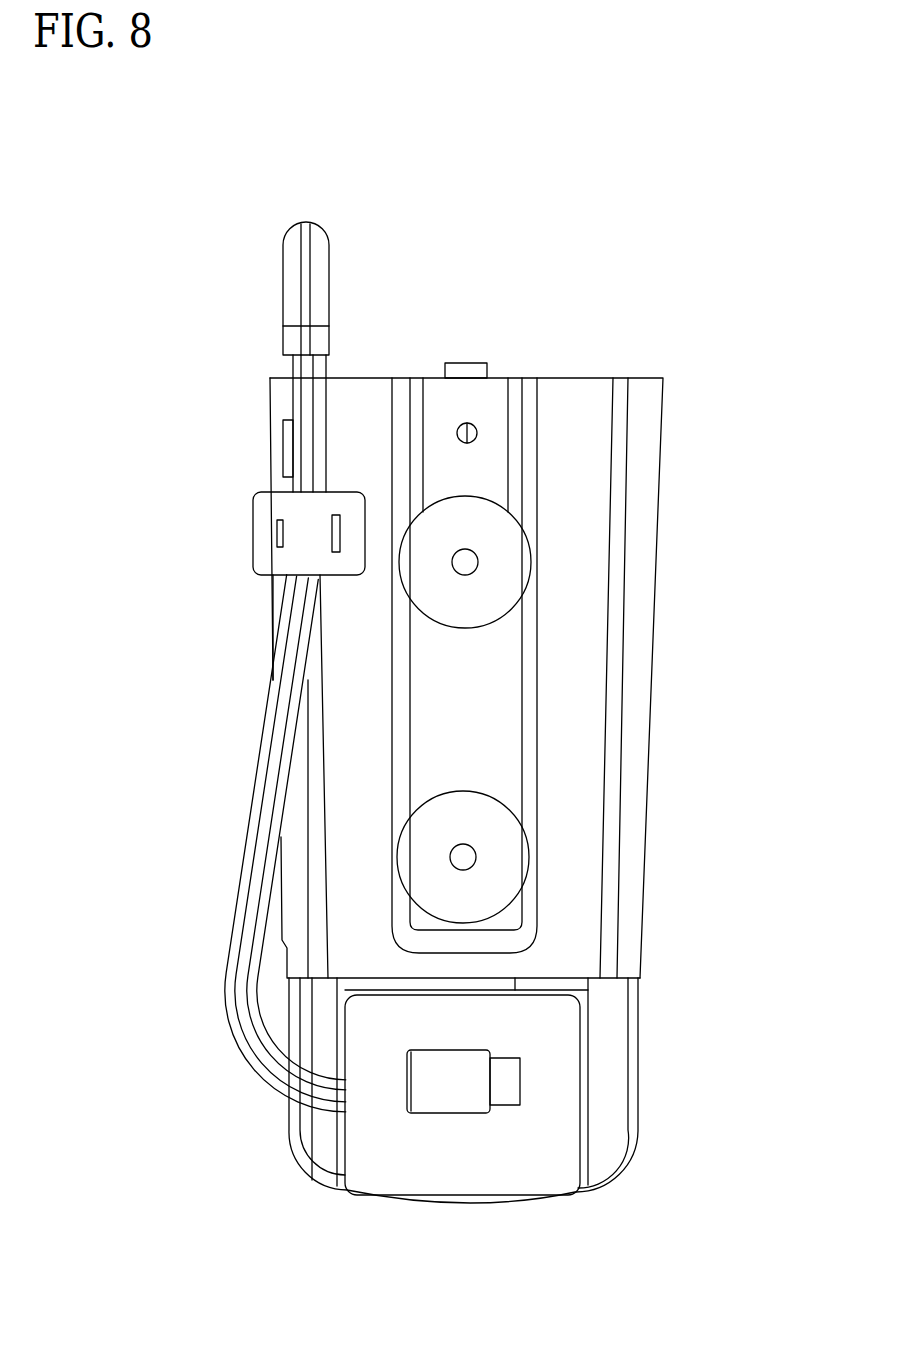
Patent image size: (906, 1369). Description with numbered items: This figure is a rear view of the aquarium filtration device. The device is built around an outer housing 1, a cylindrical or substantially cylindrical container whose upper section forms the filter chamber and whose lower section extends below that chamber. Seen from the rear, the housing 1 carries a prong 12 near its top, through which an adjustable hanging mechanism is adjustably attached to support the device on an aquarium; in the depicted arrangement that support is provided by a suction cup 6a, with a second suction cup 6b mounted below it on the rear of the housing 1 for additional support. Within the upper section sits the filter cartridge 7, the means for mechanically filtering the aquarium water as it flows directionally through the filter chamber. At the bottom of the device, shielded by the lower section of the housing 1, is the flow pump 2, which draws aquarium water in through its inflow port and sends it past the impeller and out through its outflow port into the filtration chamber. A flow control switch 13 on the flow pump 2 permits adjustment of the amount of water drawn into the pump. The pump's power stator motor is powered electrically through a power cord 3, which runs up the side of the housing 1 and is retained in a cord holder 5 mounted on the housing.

The outer housing 1 is at (655, 653).
The flow pump 2 is at (537, 1168).
The power cord 3 is at (273, 726).
The cord holder 5 is at (288, 272).
The filter cartridge 7 is at (465, 370).
The prong 12 is at (472, 422).
The suction cup 6a is at (515, 563).
The suction cup 6b is at (505, 847).
The flow control switch 13 is at (440, 1095).